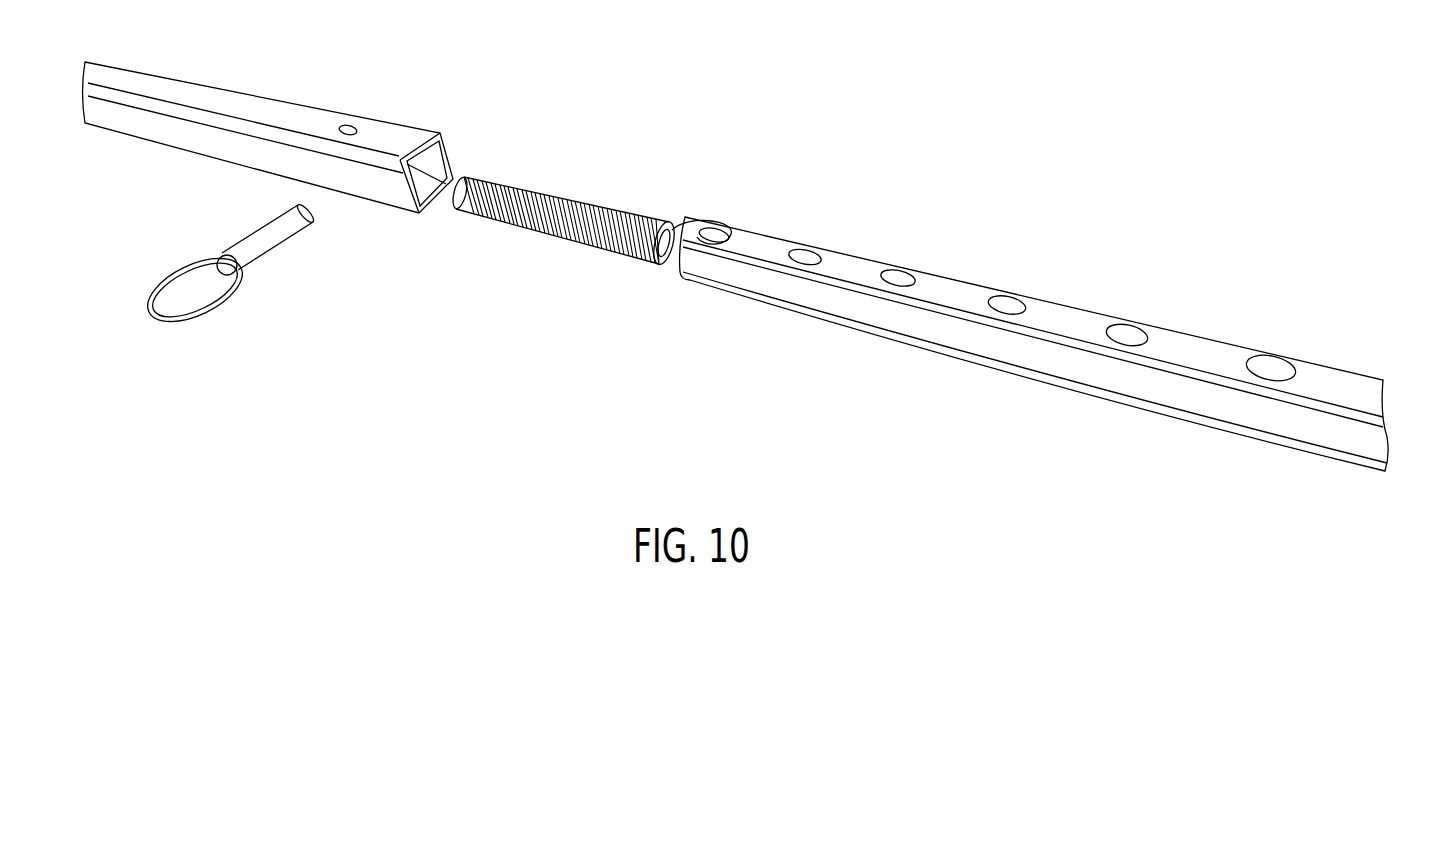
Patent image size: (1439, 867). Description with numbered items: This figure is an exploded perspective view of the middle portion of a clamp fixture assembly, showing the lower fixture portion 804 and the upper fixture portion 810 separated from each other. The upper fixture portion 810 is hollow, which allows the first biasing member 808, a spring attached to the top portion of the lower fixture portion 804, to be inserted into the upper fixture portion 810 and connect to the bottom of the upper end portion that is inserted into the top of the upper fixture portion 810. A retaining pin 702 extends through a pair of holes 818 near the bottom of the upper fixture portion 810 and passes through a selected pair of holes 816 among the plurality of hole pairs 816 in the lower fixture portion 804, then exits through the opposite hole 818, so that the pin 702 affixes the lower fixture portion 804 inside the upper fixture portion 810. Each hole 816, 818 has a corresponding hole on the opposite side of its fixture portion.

The retaining pin 702 is at (283, 245).
The lower fixture portion 804 is at (1327, 363).
The first biasing member 808 is at (535, 187).
The upper fixture portion 810 is at (407, 128).
The hole pairs 816 is at (734, 204).
The pair of holes 818 is at (355, 118).